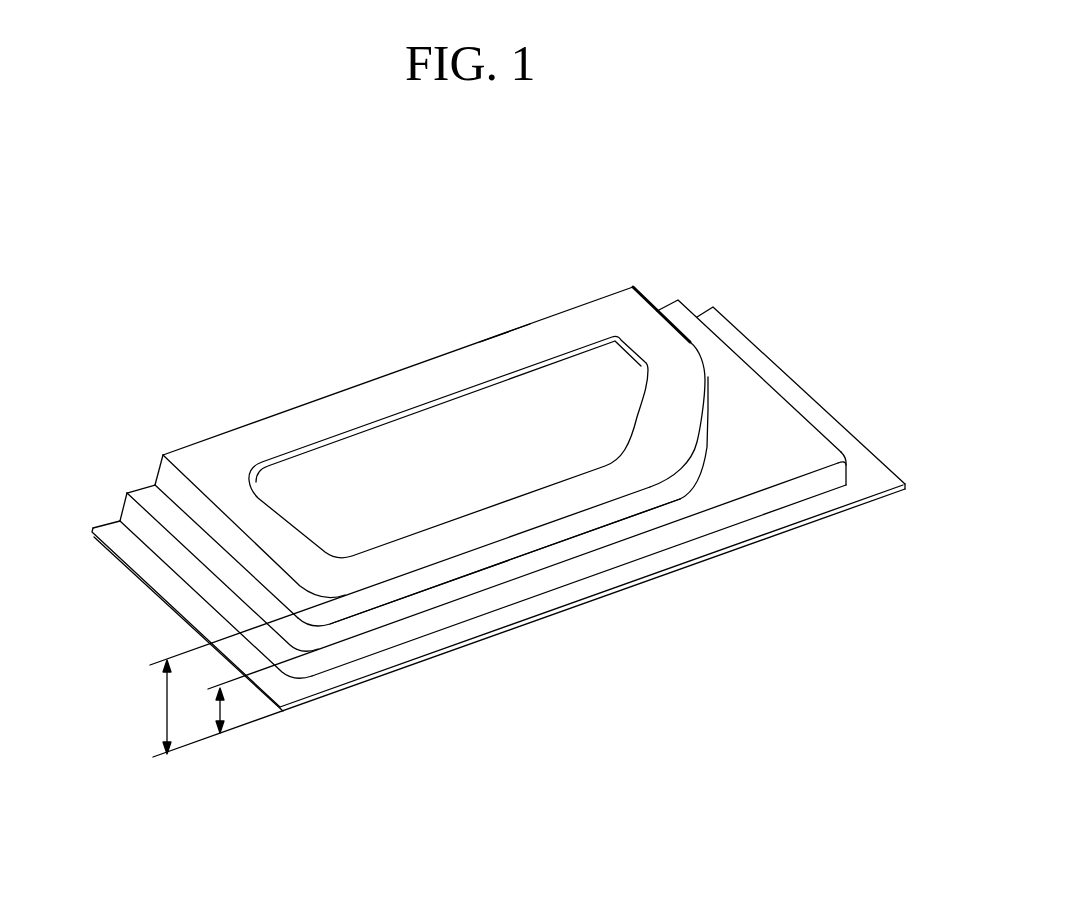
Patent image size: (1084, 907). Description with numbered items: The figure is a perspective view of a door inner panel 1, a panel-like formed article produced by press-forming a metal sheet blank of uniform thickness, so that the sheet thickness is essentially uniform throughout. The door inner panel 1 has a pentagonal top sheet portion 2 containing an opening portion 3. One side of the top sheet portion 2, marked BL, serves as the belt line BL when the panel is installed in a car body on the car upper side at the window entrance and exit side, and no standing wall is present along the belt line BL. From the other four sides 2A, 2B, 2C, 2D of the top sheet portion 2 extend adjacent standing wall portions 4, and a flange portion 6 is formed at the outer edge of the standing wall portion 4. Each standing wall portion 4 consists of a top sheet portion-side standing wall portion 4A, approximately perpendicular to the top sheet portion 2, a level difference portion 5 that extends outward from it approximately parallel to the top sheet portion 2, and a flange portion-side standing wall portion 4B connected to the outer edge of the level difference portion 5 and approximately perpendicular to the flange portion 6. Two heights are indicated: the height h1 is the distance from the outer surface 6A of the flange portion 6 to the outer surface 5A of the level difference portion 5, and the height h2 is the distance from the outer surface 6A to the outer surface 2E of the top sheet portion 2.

The door inner panel 1 is at (220, 290).
The top sheet portion 2 is at (625, 305).
The side of the top sheet portion 2A is at (192, 488).
The side of the top sheet portion 2B is at (542, 527).
The side of the top sheet portion 2C is at (713, 400).
The side of the top sheet portion 2D is at (690, 335).
The outer surface of the top sheet portion 2E is at (570, 322).
The opening portion 3 is at (368, 455).
The standing wall portion 4 is at (676, 683).
The top sheet portion-side standing wall portion 4A is at (432, 577).
The flange portion-side standing wall portion 4B is at (538, 586).
The level difference portion 5 is at (767, 428).
The outer surface of the level difference portion 5A is at (812, 435).
The flange portion 6 is at (860, 472).
The outer surface of the flange portion 6A is at (887, 470).
The belt line BL is at (503, 332).
The height h1 is at (206, 710).
The height h2 is at (154, 707).